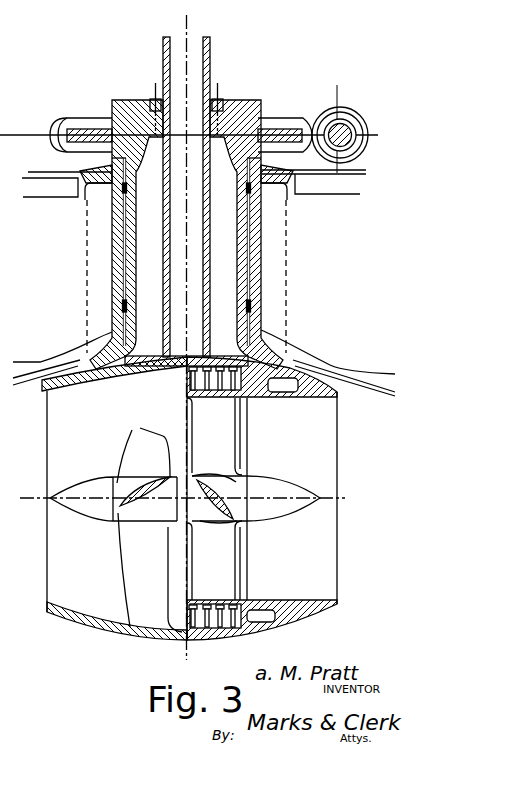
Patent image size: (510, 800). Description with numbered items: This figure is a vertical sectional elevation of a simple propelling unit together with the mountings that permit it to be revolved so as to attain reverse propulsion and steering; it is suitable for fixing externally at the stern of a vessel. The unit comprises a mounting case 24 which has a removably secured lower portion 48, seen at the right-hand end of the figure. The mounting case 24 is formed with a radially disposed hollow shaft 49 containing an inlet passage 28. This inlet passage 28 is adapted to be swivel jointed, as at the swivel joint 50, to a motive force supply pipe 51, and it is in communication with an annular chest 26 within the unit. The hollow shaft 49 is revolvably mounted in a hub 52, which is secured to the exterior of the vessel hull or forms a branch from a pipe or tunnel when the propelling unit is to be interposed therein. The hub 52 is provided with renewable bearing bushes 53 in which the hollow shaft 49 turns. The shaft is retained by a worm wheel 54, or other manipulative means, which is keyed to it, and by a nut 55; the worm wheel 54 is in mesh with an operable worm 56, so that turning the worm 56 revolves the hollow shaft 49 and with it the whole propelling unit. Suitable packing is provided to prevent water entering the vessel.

The mounting case 24 is at (119, 624).
The annular chest 26 is at (268, 380).
The inlet passage 28 is at (192, 217).
The lower portion 48 is at (316, 552).
The hollow shaft 49 is at (240, 254).
The swivel joint 50 is at (224, 100).
The motive force supply pipe 51 is at (195, 54).
The hub 52 is at (257, 234).
The renewable bearing bushes 53 is at (249, 212).
The worm wheel 54 is at (112, 127).
The nut 55 is at (264, 103).
The worm 56 is at (354, 111).